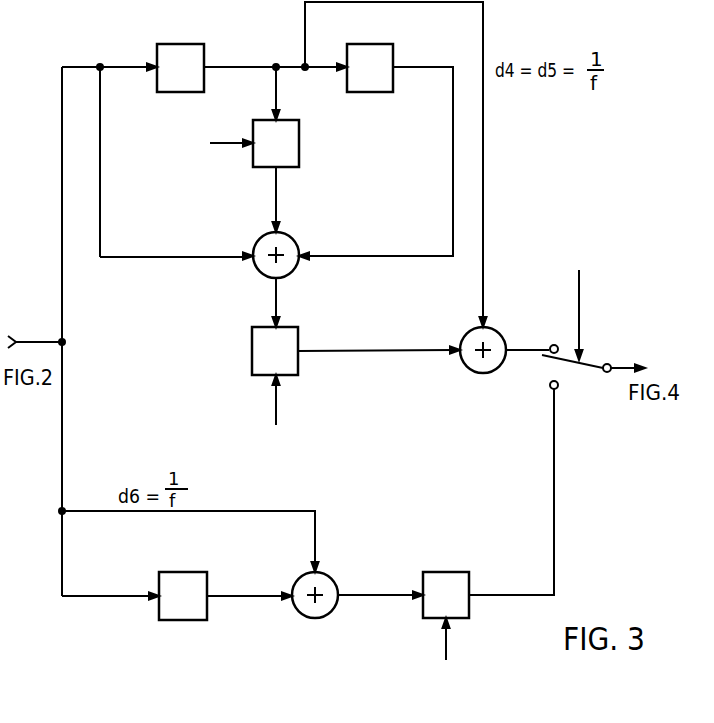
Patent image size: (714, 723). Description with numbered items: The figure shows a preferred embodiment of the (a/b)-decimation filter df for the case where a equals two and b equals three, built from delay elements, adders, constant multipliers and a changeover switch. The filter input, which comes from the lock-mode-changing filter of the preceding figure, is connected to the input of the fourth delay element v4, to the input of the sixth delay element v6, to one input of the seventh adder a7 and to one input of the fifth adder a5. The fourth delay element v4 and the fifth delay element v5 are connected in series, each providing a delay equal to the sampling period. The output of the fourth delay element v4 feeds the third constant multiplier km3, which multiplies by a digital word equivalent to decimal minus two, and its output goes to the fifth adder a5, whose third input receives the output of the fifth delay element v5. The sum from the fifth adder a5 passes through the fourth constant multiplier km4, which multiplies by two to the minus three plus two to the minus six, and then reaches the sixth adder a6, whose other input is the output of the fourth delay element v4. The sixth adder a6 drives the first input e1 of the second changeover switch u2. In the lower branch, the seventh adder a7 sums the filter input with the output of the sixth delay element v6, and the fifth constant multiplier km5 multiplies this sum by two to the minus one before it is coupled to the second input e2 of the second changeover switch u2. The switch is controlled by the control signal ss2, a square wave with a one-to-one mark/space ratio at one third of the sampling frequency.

The fourth delay element v4 is at (183, 44).
The fifth delay element v5 is at (372, 44).
The third constant multiplier km3 is at (299, 133).
The fifth adder a5 is at (292, 238).
The fourth constant multiplier km4 is at (298, 340).
The sixth adder a6 is at (500, 333).
The first input of second changeover switch e1 is at (532, 337).
The second input of second changeover switch e2 is at (513, 484).
The control signal ss2 is at (582, 301).
The second changeover switch u2 is at (566, 372).
The sixth delay element v6 is at (185, 572).
The seventh adder a7 is at (330, 577).
The fifth constant multiplier km5 is at (447, 572).
The (a/b)-decimation filter df is at (153, 388).